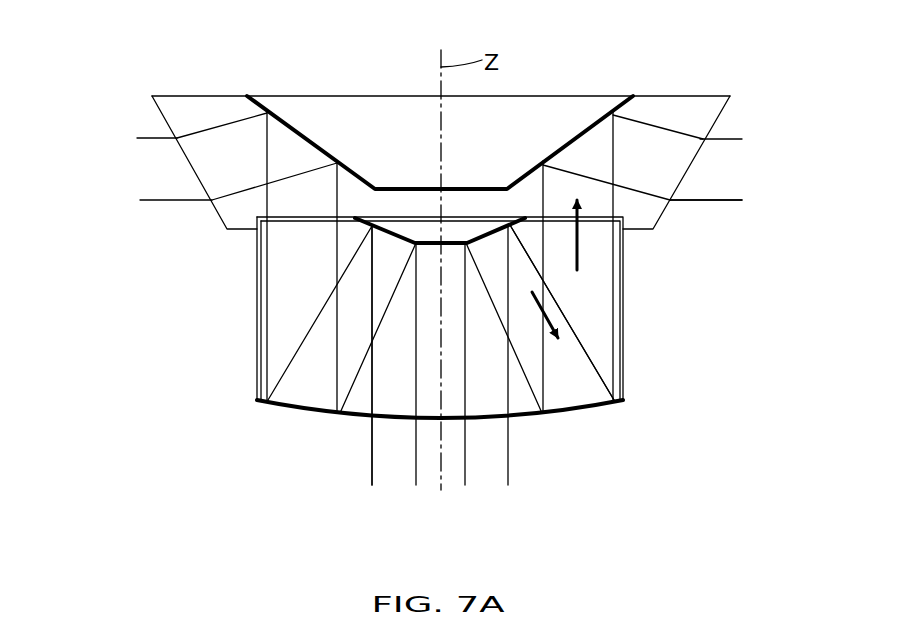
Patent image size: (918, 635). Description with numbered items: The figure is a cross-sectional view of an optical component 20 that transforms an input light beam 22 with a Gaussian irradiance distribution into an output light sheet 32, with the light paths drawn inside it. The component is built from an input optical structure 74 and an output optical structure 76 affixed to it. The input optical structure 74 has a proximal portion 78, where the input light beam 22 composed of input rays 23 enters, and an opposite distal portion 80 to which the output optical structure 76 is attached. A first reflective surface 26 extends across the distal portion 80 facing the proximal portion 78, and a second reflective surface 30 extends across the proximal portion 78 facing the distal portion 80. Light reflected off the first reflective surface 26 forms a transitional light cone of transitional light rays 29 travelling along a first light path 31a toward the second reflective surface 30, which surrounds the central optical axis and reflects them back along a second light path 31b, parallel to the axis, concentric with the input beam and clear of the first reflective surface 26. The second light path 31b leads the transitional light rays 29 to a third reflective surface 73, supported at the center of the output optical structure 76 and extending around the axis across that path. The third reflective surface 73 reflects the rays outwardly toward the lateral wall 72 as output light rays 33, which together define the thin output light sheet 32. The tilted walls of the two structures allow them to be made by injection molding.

The optical component 20 is at (771, 78).
The input light beam 22 is at (372, 503).
The input ray 23 is at (372, 450).
The first reflective surface 26 is at (388, 228).
The transitional light rays 29 is at (617, 143).
The second reflective surface 30 is at (590, 402).
The first light path 31a is at (552, 317).
The second light path 31b is at (578, 243).
The output light sheet 32 is at (758, 128).
The output light rays 33 is at (727, 200).
The lateral wall 72 is at (158, 110).
The third reflective surface 73 is at (303, 142).
The input optical structure 74 is at (257, 370).
The output optical structure 76 is at (185, 96).
The proximal portion 78 is at (257, 400).
The distal portion 80 is at (257, 242).